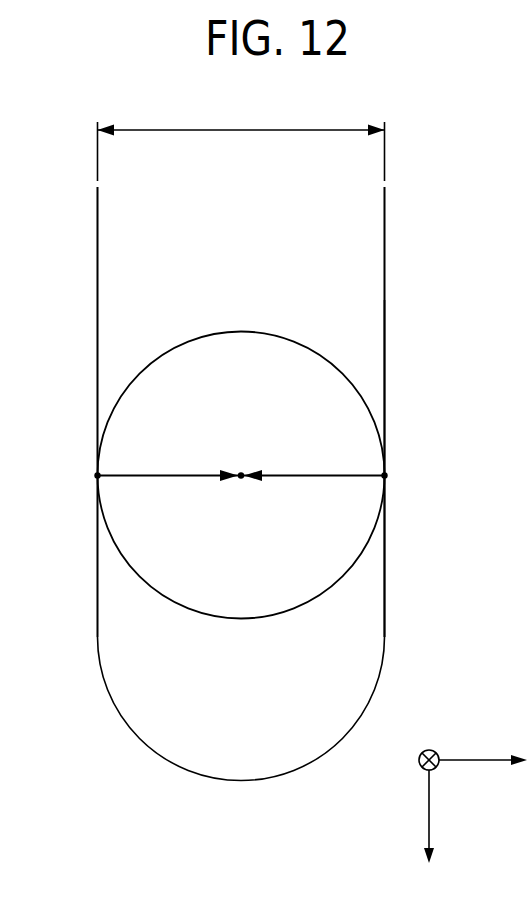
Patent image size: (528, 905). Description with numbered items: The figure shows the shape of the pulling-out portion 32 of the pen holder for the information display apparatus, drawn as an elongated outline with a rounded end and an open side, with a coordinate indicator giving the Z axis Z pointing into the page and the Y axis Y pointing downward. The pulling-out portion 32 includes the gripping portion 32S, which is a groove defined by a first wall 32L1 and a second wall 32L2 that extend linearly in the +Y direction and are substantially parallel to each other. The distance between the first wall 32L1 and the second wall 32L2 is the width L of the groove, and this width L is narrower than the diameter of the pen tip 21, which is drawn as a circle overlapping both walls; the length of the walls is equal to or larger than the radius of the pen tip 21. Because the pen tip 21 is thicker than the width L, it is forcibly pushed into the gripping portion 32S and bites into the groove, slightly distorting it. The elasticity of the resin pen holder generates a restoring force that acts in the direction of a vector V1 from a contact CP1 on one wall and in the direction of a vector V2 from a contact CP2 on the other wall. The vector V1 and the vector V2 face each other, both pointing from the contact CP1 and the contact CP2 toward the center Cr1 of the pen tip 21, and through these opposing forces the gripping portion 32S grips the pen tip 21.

The pulling-out portion 32 is at (384, 233).
The first wall 32L1 is at (384, 280).
The second wall 32L2 is at (98, 280).
The gripping portion 32S is at (384, 382).
The pen tip 21 is at (322, 356).
The center of the pen tip Cr1 is at (241, 472).
The contact CP1 is at (384, 476).
The contact CP2 is at (98, 476).
The vector V1 is at (315, 476).
The vector V2 is at (175, 477).
The width L is at (241, 117).
The Z axis Z is at (422, 749).
The Y axis Y is at (474, 821).